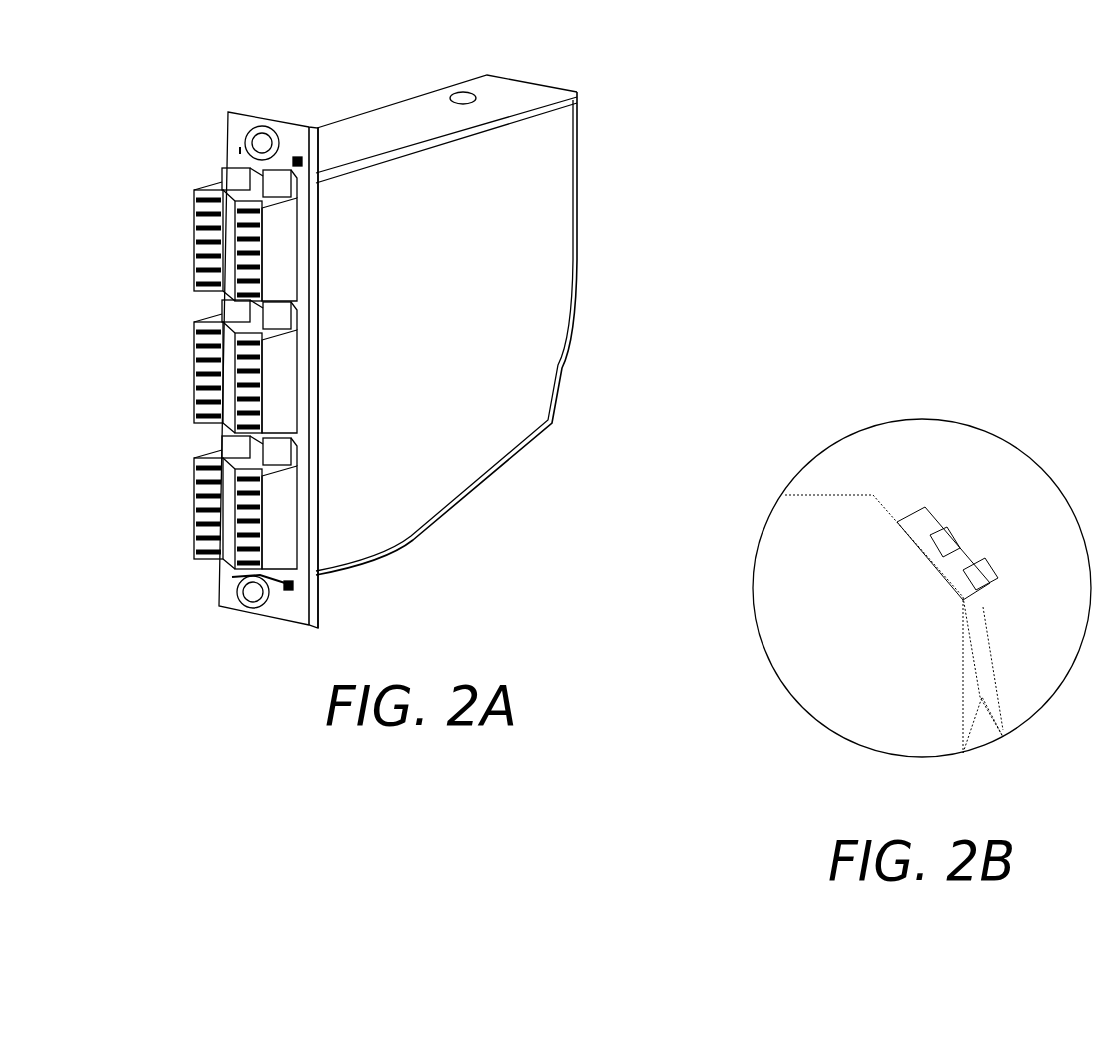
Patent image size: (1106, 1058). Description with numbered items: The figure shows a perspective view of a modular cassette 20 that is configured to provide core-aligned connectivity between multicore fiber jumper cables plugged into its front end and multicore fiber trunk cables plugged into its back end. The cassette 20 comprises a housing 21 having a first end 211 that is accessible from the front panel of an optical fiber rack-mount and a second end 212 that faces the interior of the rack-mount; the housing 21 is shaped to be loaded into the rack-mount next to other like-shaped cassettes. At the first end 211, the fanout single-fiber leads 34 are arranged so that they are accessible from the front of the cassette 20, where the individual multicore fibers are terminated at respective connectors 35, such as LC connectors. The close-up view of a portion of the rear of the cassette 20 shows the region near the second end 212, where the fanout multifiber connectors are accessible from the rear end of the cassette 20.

In FIG. 2A, the modular cassette 20 is at (382, 52).
In FIG. 2A, the housing 21 is at (457, 341).
In FIG. 2A, the first end 211 is at (197, 308).
In FIG. 2A, the second end 212 is at (573, 362).
In FIG. 2A, the individual fibers 34 is at (195, 498).
In FIG. 2B, the connectors 35 is at (962, 567).